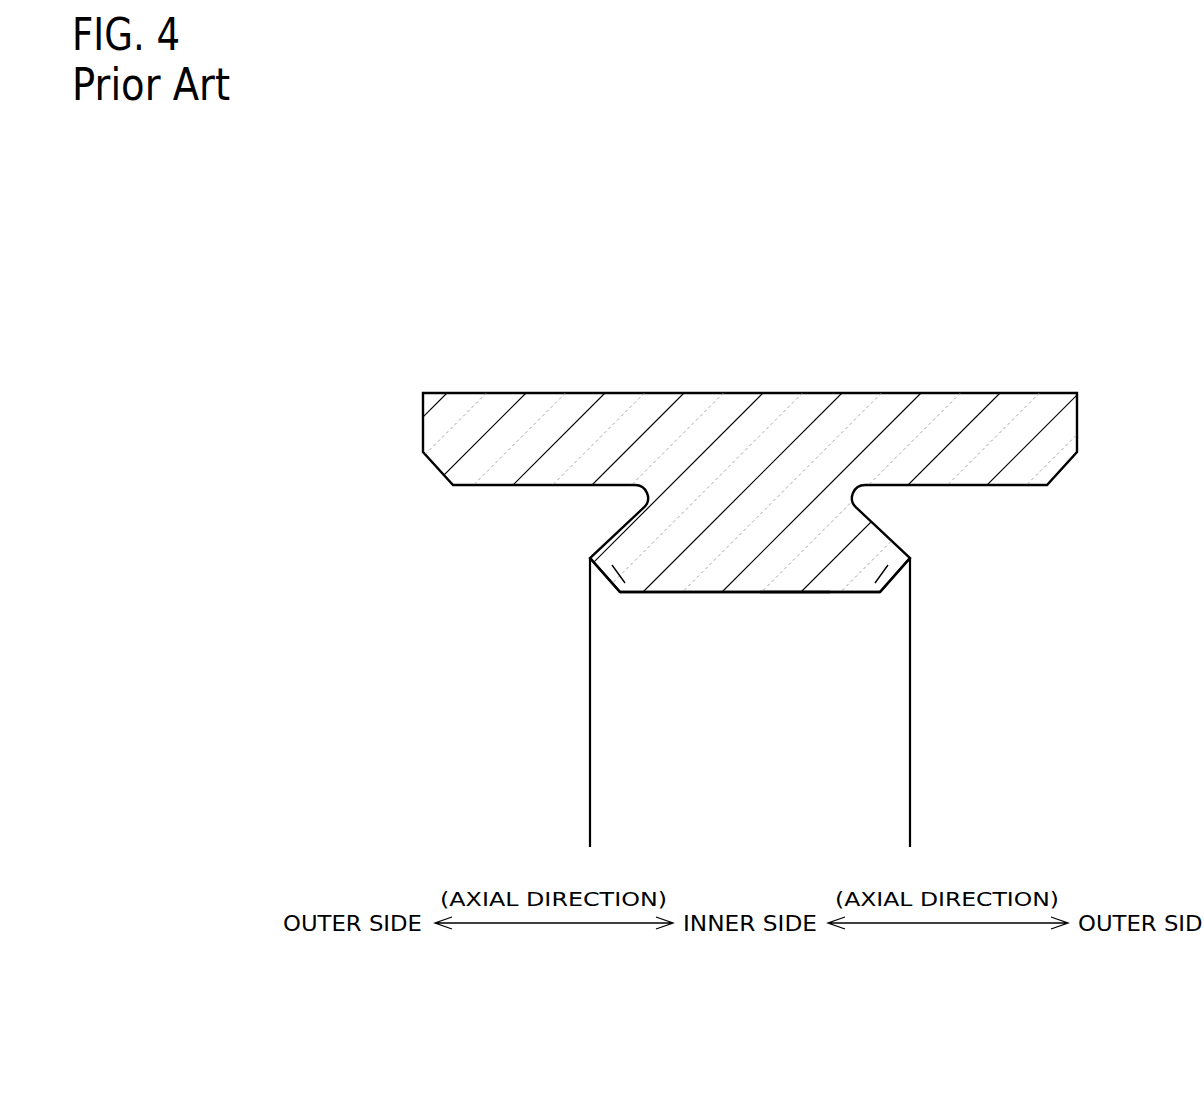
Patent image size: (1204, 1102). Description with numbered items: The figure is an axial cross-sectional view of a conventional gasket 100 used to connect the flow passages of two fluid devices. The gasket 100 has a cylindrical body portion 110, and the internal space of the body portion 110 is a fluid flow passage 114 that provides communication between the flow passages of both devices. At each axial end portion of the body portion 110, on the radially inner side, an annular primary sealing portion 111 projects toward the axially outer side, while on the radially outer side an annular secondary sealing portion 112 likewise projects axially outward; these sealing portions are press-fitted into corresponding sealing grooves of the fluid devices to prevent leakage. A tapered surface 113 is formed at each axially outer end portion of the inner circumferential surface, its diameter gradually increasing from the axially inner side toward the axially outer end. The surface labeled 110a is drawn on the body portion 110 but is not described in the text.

The conventional gasket 100 is at (743, 326).
The body portion 110 is at (713, 563).
The end surface 110a is at (795, 593).
The primary sealing portion 111 is at (613, 566).
The secondary sealing portion 112 is at (495, 432).
The tapered surface 113 is at (607, 579).
The fluid flow passage 114 is at (727, 762).